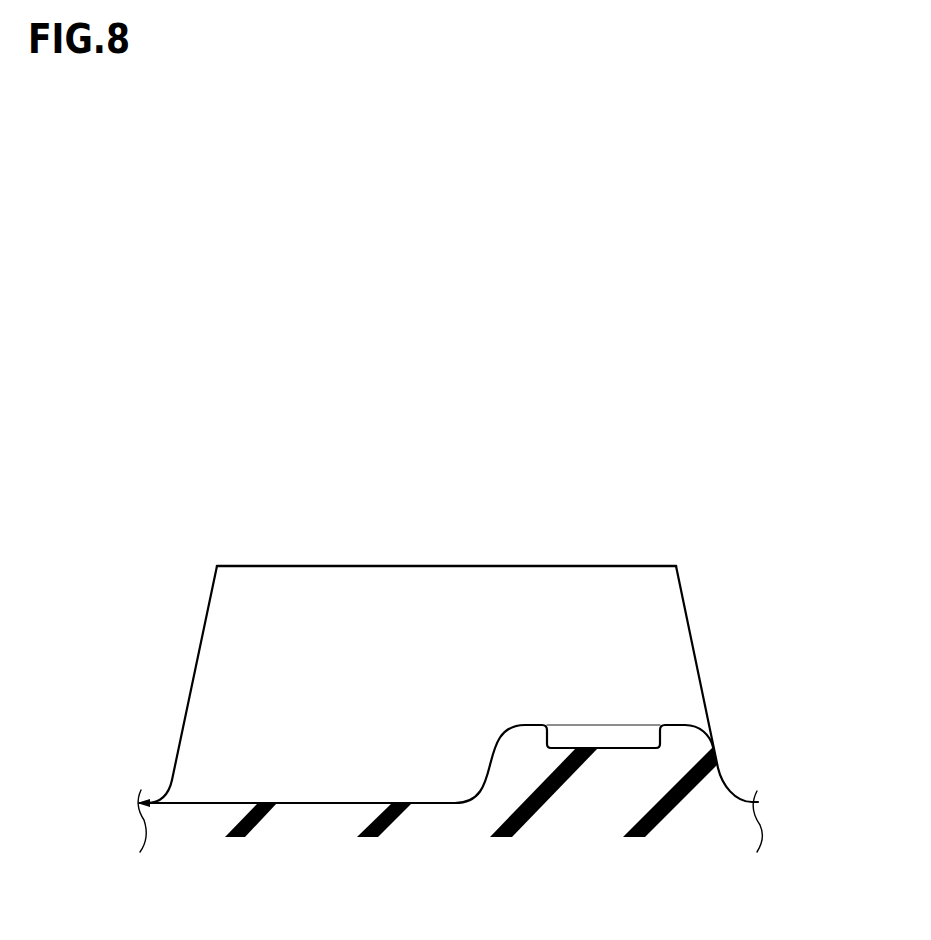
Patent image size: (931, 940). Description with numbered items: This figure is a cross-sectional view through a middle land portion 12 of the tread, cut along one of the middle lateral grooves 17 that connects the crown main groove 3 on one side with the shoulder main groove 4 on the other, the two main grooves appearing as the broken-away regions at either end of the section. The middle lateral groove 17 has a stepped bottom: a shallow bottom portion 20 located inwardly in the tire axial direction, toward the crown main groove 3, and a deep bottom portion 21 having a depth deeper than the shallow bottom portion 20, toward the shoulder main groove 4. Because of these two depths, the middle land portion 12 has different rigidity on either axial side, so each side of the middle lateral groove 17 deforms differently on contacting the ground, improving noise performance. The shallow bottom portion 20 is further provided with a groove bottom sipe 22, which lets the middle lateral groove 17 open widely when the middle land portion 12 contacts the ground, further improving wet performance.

The middle land portion 12 is at (511, 565).
The middle lateral groove 17 is at (345, 667).
The groove bottom sipe 22 is at (605, 735).
The shallow bottom portion 20 is at (680, 725).
The deep bottom portion 21 is at (213, 802).
The shoulder main groove 4 is at (167, 682).
The crown main groove 3 is at (752, 733).